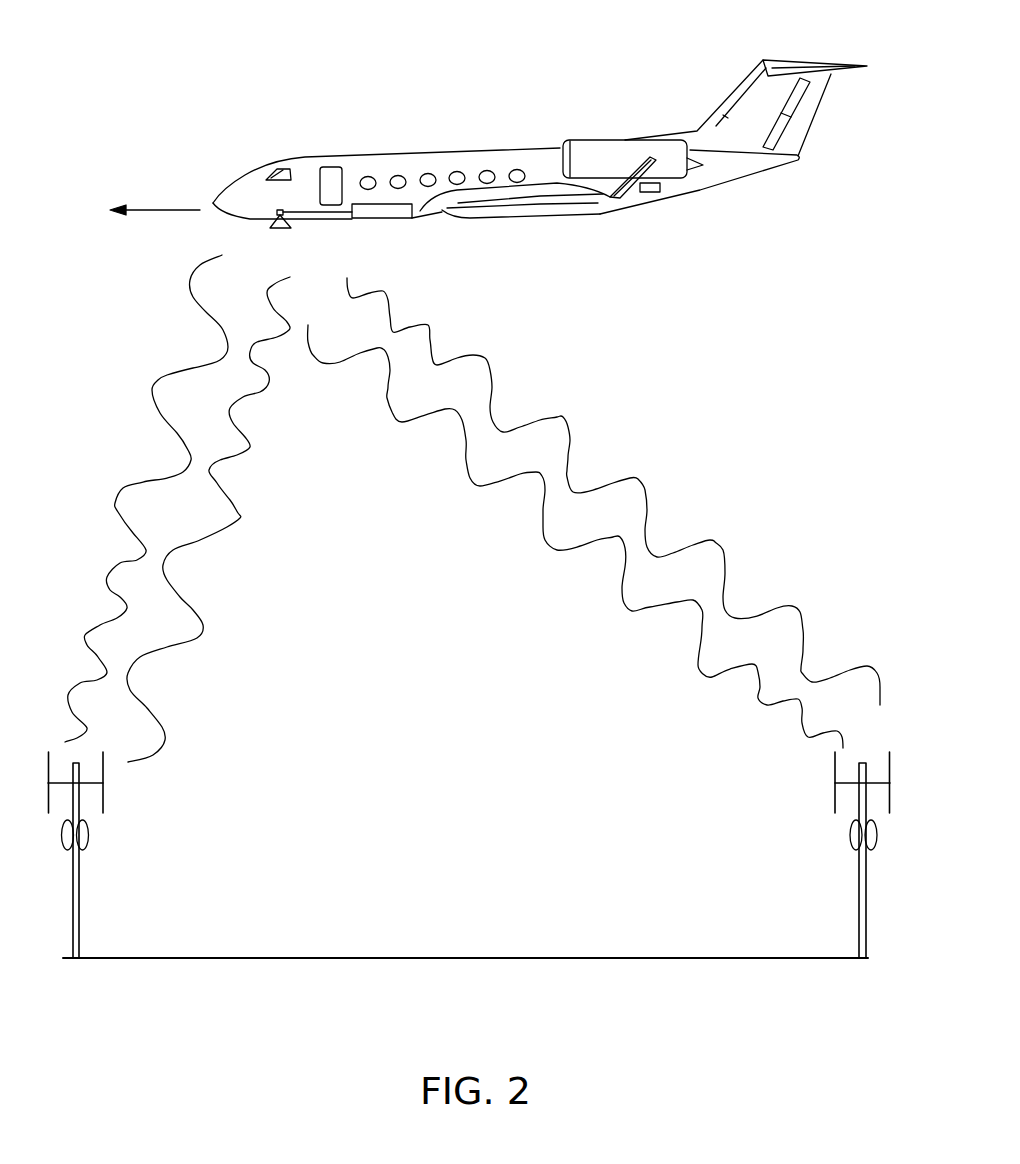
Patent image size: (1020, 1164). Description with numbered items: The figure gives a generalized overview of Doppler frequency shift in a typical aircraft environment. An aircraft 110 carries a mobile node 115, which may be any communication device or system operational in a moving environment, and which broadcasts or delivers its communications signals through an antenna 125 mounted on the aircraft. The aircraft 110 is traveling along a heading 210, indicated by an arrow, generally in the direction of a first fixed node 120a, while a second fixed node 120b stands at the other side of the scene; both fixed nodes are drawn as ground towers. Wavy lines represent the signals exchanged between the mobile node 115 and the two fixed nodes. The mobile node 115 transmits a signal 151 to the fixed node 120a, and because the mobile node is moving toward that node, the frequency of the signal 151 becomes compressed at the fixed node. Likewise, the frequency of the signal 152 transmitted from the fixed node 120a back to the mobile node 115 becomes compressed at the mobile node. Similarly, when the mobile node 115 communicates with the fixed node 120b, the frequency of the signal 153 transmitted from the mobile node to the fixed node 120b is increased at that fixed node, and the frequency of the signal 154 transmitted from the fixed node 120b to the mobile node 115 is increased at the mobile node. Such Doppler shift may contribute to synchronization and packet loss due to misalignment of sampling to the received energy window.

The aircraft 110 is at (503, 150).
The mobile node 115 is at (373, 218).
The antenna 125 is at (270, 226).
The heading 210 is at (168, 208).
The signal 151 is at (110, 497).
The signal 152 is at (203, 633).
The signal 153 is at (540, 525).
The signal 154 is at (642, 477).
The fixed node 120a is at (80, 925).
The fixed node 120b is at (855, 907).